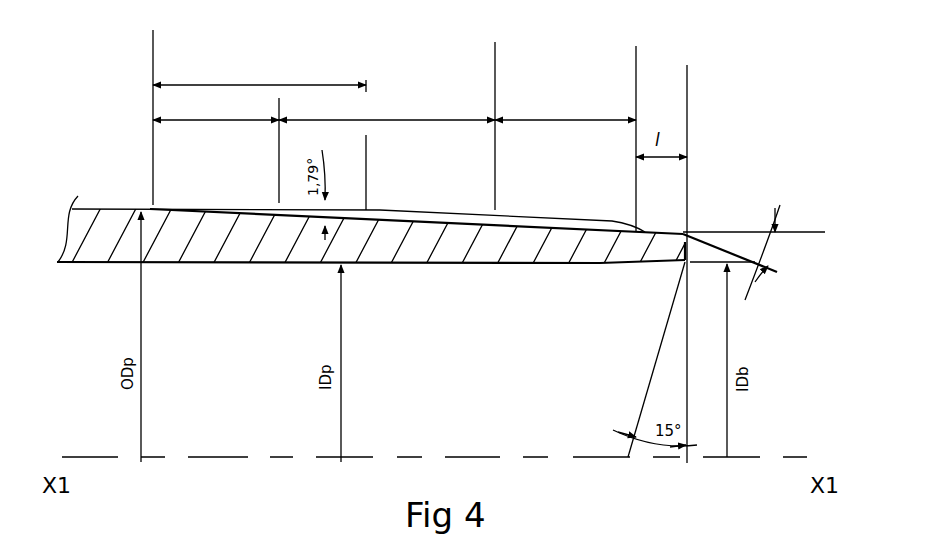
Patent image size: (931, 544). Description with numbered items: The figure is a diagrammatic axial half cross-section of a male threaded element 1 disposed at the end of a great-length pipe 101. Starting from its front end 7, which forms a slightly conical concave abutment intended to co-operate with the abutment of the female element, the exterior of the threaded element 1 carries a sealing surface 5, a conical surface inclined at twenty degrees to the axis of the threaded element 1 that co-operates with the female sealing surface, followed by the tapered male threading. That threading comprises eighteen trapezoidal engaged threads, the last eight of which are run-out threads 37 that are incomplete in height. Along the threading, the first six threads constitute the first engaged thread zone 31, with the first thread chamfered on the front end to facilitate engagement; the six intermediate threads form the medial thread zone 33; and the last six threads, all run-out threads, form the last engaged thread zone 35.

The male threaded element 1 is at (370, 212).
The sealing surface 5 is at (684, 234).
The front end 7 is at (690, 264).
The first engaged thread zone 31 is at (565, 109).
The medial thread zone 33 is at (387, 109).
The last engaged thread zone 35 is at (216, 109).
The run-out threads 37 is at (259, 75).
The great-length pipe 101 is at (88, 240).